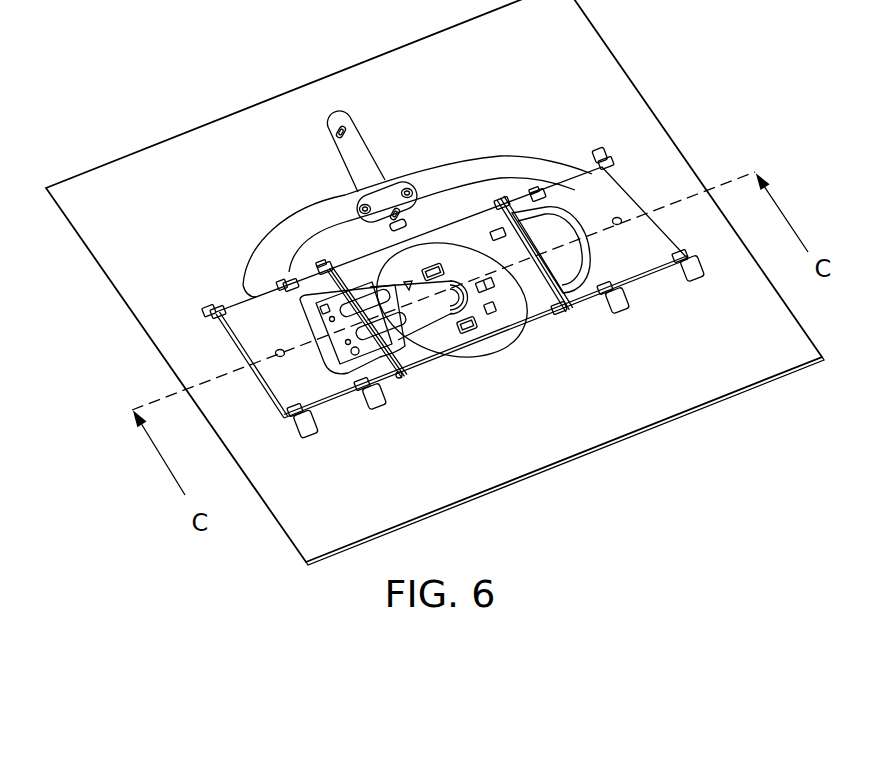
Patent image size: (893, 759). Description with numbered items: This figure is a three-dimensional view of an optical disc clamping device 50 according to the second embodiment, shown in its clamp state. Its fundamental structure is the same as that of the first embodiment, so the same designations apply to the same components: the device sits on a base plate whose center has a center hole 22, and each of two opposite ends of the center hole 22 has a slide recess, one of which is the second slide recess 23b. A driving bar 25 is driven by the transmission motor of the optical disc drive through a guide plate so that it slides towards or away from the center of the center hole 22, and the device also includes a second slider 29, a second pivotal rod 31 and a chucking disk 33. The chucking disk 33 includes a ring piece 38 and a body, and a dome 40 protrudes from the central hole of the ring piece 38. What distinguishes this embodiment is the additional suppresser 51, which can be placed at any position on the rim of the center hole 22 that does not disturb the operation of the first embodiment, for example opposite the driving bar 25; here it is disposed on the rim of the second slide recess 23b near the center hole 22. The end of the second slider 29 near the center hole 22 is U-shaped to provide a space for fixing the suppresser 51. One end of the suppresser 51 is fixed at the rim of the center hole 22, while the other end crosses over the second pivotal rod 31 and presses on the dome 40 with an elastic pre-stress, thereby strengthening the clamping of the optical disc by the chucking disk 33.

The optical disc clamping device 50 is at (528, 104).
The driving bar 25 is at (340, 158).
The suppresser 51 is at (266, 310).
The second slide recess 23b is at (207, 311).
The second slider 29 is at (322, 411).
The second pivotal rod 31 is at (398, 374).
The dome 40 is at (449, 315).
The ring piece 38 is at (464, 355).
The center hole 22 is at (504, 340).
The chucking disk 33 is at (527, 312).